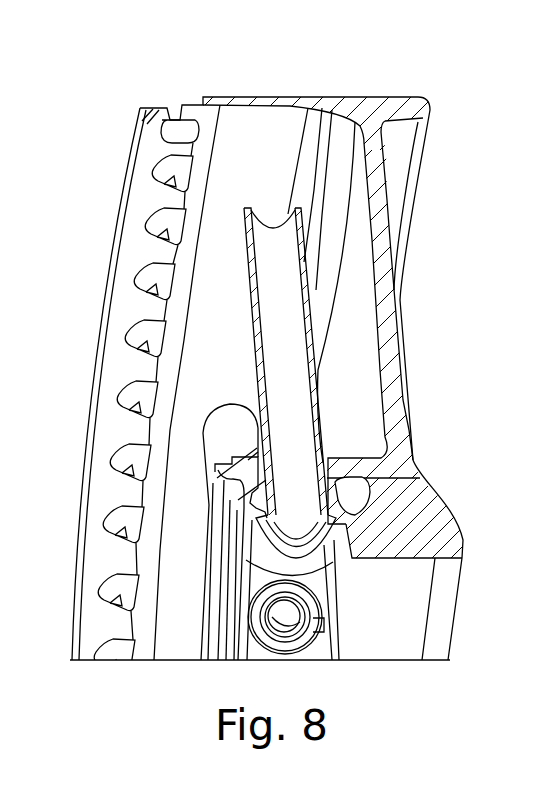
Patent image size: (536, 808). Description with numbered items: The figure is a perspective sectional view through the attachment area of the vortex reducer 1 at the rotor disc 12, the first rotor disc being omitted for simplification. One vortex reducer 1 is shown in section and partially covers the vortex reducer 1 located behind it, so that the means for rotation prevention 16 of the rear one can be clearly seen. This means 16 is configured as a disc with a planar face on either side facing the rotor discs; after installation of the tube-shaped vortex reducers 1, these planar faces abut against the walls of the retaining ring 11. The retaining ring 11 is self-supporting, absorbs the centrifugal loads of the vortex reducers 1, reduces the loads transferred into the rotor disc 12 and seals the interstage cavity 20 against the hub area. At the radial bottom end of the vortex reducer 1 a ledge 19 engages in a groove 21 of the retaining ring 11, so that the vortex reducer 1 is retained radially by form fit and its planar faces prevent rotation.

The interstage cavity 20 is at (255, 137).
The vortex reducer 1 is at (287, 357).
The rotor disc 12 is at (393, 373).
The ledge 19 is at (420, 475).
The means for rotation prevention 16 is at (353, 562).
The retaining ring 11 is at (217, 477).
The groove 21 is at (217, 492).